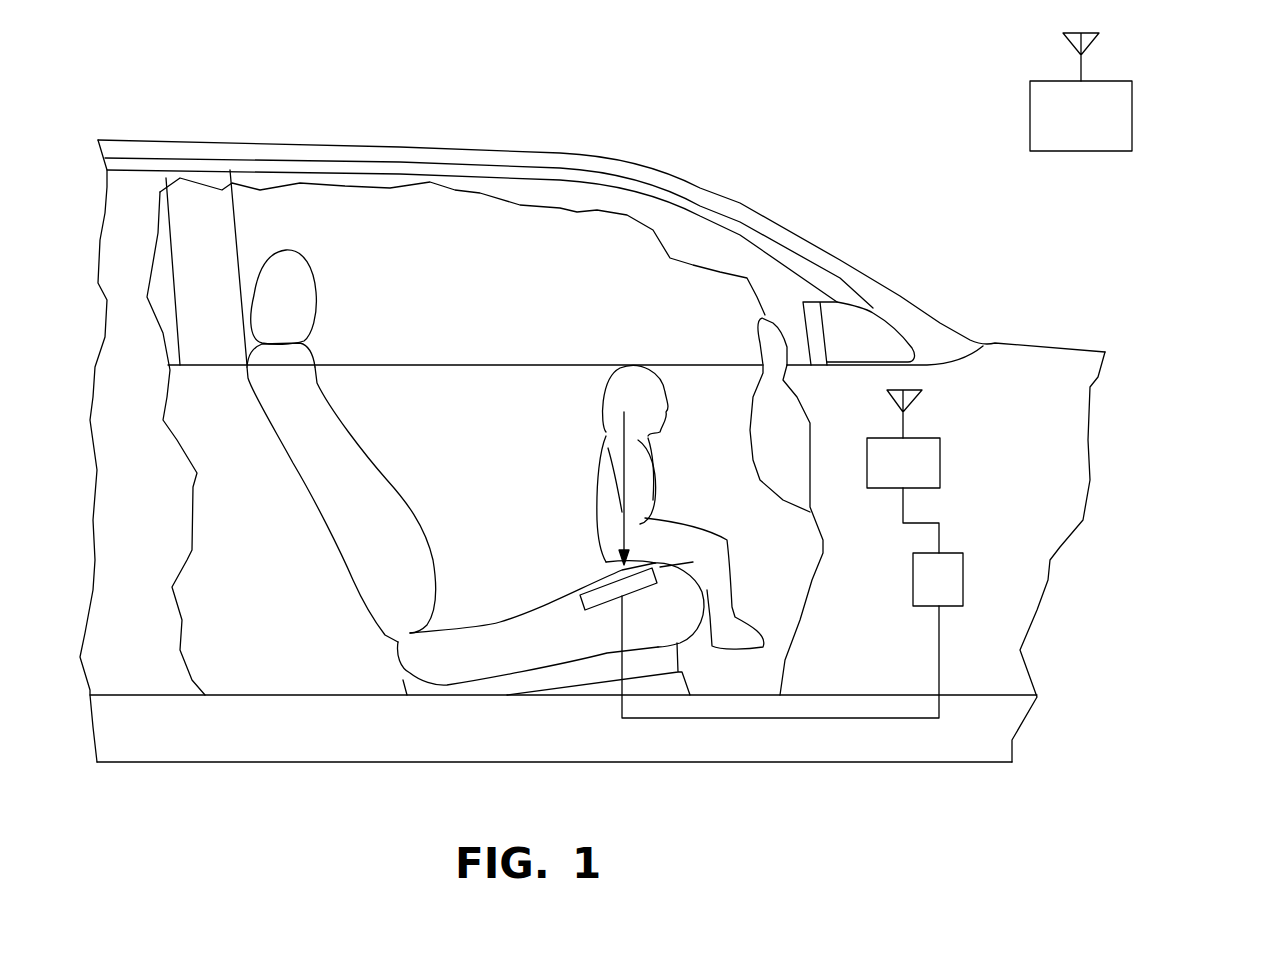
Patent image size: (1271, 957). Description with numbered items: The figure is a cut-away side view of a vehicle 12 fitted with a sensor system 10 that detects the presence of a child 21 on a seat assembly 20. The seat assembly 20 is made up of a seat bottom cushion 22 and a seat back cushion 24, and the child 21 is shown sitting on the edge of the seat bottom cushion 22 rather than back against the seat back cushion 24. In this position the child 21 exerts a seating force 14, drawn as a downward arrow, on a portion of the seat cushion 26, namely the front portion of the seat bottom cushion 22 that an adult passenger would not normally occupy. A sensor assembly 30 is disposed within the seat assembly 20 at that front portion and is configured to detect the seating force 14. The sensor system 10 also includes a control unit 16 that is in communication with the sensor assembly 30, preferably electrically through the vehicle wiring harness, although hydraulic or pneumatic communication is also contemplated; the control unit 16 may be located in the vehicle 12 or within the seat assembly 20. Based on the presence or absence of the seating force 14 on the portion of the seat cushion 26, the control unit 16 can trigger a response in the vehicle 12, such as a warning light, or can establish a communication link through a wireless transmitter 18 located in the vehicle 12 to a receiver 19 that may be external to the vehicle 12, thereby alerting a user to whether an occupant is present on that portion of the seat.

The sensor system 10 is at (603, 237).
The vehicle 12 is at (847, 187).
The seating force 14 is at (625, 523).
The control unit 16 is at (963, 578).
The wireless transmitter 18 is at (940, 463).
The receiver 19 is at (1132, 120).
The seat assembly 20 is at (278, 237).
The child 21 is at (665, 383).
The seat bottom cushion 22 is at (675, 597).
The seat back cushion 24 is at (378, 607).
The portion of the seat cushion 26 is at (637, 563).
The sensor assembly 30 is at (580, 597).